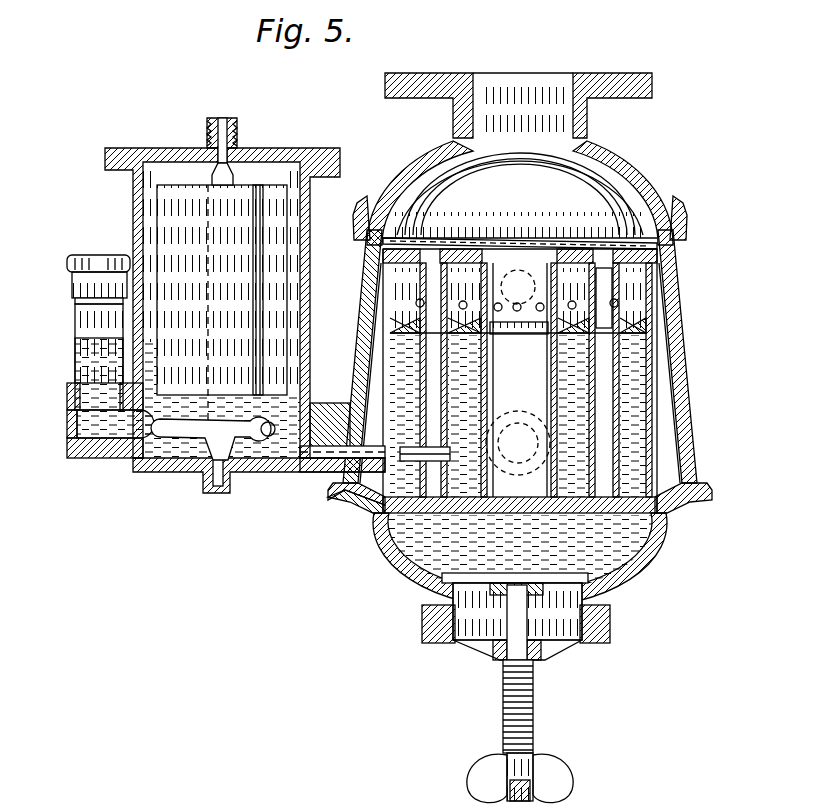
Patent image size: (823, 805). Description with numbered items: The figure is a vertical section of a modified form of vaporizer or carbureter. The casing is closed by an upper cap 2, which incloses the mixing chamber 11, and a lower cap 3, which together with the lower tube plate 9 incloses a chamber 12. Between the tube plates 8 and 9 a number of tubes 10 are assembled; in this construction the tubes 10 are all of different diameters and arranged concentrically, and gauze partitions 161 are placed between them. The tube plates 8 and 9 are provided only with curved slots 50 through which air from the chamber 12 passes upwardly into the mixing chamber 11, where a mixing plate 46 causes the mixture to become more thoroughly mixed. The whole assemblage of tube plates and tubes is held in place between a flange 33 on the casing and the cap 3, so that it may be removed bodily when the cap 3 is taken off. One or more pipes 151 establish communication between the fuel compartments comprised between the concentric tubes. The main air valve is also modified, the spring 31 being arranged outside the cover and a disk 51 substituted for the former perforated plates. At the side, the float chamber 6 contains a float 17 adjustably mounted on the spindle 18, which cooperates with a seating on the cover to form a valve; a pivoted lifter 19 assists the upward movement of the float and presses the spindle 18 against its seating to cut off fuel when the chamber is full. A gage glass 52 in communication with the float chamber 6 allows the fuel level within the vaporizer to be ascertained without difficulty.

The cap 2 is at (643, 185).
The cap 3 is at (415, 510).
The float chamber 6 is at (135, 233).
The tube plate 8 is at (657, 262).
The tube plate 9 is at (663, 520).
The tubes 10 is at (640, 388).
The mixing chamber 11 is at (598, 188).
The chamber 12 is at (443, 560).
The float 17 is at (210, 215).
The spindle 18 is at (232, 163).
The lifter 19 is at (251, 452).
The spring 31 is at (533, 712).
The flange 33 is at (665, 247).
The mixing plate 46 is at (470, 240).
The curved slots 50 is at (657, 232).
The disk 51 is at (463, 620).
The gage glass 52 is at (88, 318).
The pipes 151 is at (362, 483).
The gauze partitions 161 is at (623, 322).